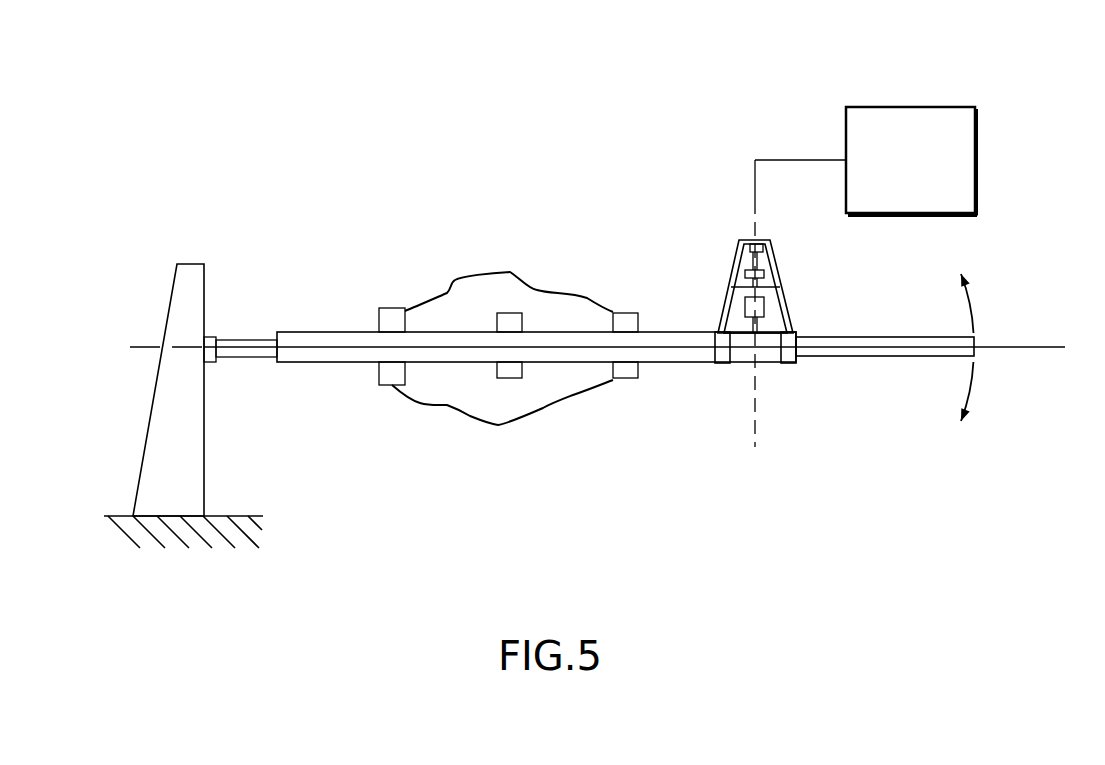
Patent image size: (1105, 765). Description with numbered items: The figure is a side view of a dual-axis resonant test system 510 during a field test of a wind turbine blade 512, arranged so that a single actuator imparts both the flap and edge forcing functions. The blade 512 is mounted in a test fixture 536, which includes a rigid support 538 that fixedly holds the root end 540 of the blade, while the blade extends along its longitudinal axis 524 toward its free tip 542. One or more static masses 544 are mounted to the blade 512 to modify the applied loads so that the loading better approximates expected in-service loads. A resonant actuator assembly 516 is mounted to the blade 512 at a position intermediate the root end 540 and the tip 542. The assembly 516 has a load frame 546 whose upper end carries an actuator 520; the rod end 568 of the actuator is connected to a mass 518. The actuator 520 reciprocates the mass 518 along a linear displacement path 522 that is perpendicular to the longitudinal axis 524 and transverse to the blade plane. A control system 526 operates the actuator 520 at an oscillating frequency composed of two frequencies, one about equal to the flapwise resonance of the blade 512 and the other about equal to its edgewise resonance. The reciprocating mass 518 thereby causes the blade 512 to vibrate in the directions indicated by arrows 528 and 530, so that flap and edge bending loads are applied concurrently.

The dual-axis resonant test system 510 is at (218, 102).
The wind turbine blade 512 is at (298, 290).
The resonant actuator assembly 516 is at (722, 235).
The mass 518 is at (770, 313).
The actuator 520 is at (762, 252).
The linear displacement path 522 is at (755, 418).
The longitudinal axis 524 is at (1040, 347).
The control system 526 is at (928, 107).
The arrow 528 is at (968, 300).
The arrow 530 is at (968, 386).
The test fixture 536 is at (160, 291).
The rigid support 538 is at (148, 433).
The root end 540 is at (240, 357).
The tip 542 is at (913, 335).
The static masses 544 is at (507, 313).
The load frame 546 is at (733, 282).
The rod end 568 is at (764, 286).